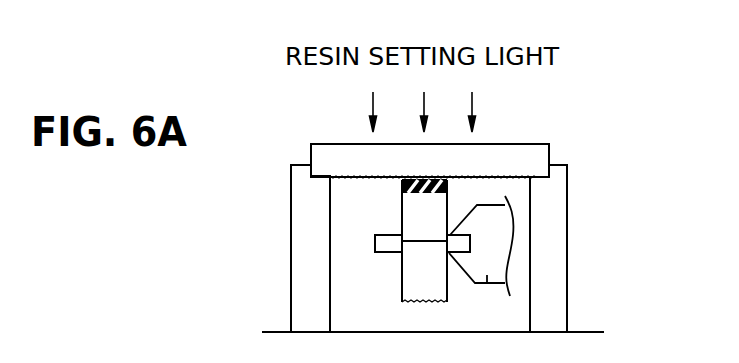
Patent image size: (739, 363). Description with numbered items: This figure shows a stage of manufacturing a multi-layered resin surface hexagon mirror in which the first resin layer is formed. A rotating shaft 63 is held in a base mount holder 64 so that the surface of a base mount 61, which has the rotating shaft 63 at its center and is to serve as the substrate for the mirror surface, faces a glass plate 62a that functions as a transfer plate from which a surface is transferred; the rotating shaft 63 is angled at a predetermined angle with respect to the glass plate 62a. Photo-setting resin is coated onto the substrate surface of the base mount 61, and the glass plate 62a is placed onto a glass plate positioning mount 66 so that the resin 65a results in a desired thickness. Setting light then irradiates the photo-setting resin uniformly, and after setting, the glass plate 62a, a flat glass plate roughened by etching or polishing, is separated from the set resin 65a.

The glass plate 62a is at (548, 143).
The glass plate positioning mount 66 is at (557, 301).
The base mount 61 is at (406, 277).
The resin 65a is at (402, 182).
The base mount holder 64 is at (487, 281).
The rotating shaft 63 is at (462, 247).